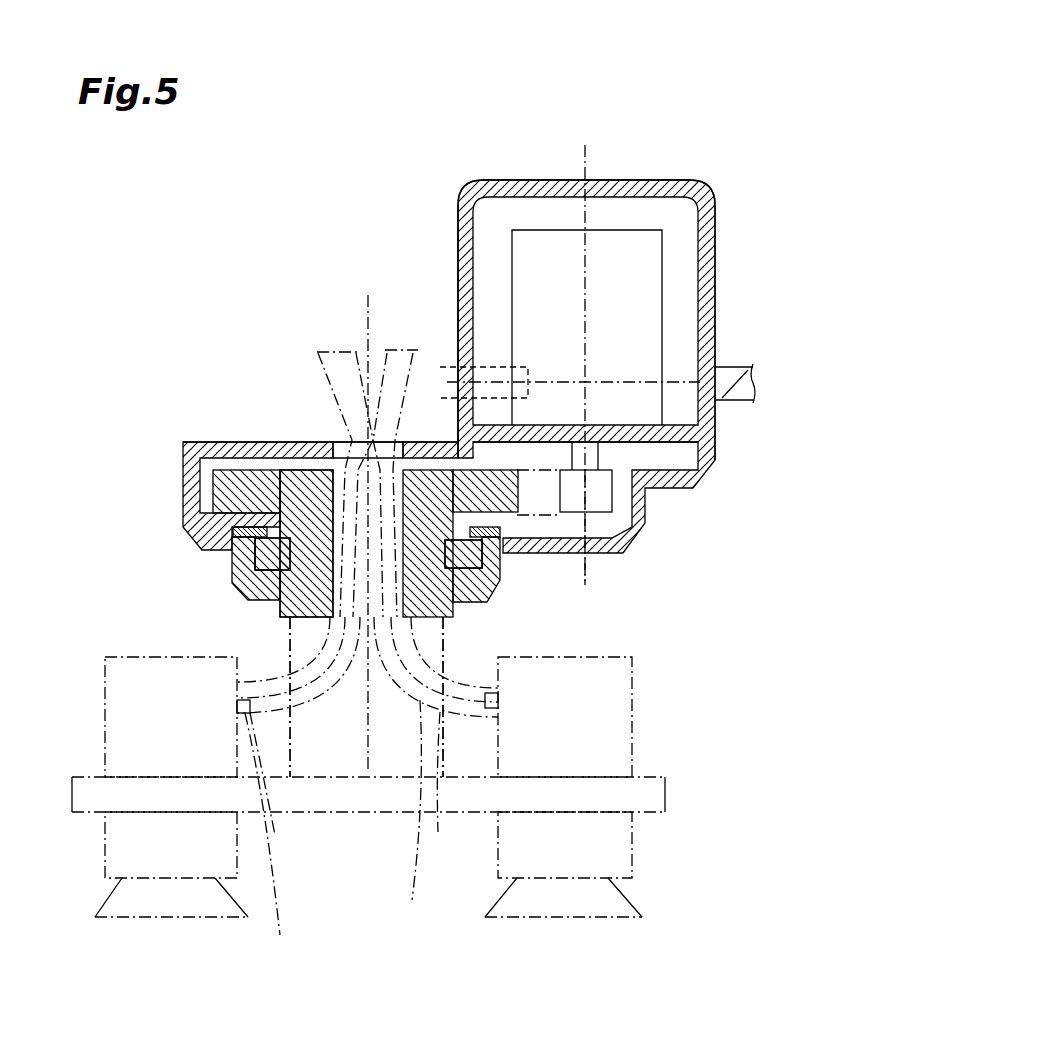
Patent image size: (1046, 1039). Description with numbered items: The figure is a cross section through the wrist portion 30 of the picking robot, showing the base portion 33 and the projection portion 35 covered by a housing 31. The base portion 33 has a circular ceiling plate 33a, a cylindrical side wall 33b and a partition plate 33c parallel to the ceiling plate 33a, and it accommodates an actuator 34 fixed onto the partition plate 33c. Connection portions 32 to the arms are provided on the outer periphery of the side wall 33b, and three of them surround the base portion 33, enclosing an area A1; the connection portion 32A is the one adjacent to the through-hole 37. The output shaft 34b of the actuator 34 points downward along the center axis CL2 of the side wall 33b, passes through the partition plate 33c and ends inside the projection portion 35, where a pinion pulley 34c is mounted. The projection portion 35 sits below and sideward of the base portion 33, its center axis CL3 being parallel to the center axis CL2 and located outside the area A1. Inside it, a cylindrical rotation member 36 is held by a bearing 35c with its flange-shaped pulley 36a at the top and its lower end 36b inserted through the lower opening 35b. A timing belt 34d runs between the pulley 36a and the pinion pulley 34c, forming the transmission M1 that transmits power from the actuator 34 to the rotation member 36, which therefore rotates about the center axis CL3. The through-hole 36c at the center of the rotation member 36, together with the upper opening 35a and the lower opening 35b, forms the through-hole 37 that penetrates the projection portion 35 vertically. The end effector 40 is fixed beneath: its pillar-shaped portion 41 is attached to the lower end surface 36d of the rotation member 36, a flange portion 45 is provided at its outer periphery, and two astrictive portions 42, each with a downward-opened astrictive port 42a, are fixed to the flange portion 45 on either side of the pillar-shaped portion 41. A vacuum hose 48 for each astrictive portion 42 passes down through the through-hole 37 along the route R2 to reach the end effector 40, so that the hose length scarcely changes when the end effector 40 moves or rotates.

The wrist portion 30 is at (702, 80).
The housing 31 is at (408, 119).
The connection portion 32 is at (740, 364).
The connection portion 32A is at (485, 362).
The base portion 33 is at (468, 192).
The ceiling plate 33a is at (547, 180).
The side wall 33b is at (458, 238).
The partition plate 33c is at (647, 432).
The actuator 34 is at (643, 280).
The output shaft 34b is at (602, 458).
The pinion pulley 34c is at (603, 500).
The timing belt 34d is at (542, 520).
The projection portion 35 is at (212, 442).
The upper opening 35a is at (336, 438).
The lower opening 35b is at (440, 583).
The bearing 35c is at (343, 537).
The rotation member 36 is at (307, 552).
The pulley 36a is at (240, 497).
The lower end 36b is at (343, 633).
The through-hole 36c is at (270, 587).
The lower end surface 36d is at (378, 640).
The through-hole 37 is at (343, 488).
The end effector 40 is at (680, 727).
The pillar-shaped portion 41 is at (443, 755).
The astrictive portion 42 is at (118, 655).
The astrictive port 42a is at (165, 917).
The flange portion 45 is at (665, 795).
The vacuum hose 48 is at (352, 787).
The area A1 is at (678, 380).
The center axis CL2 is at (598, 155).
The center axis CL3 is at (362, 325).
The transmission M1 is at (596, 525).
The route R2 is at (336, 832).